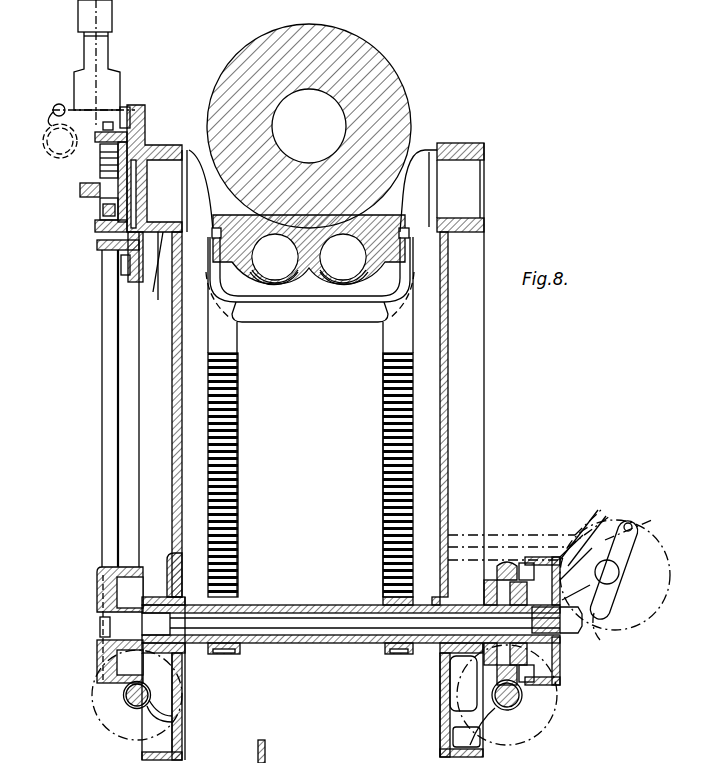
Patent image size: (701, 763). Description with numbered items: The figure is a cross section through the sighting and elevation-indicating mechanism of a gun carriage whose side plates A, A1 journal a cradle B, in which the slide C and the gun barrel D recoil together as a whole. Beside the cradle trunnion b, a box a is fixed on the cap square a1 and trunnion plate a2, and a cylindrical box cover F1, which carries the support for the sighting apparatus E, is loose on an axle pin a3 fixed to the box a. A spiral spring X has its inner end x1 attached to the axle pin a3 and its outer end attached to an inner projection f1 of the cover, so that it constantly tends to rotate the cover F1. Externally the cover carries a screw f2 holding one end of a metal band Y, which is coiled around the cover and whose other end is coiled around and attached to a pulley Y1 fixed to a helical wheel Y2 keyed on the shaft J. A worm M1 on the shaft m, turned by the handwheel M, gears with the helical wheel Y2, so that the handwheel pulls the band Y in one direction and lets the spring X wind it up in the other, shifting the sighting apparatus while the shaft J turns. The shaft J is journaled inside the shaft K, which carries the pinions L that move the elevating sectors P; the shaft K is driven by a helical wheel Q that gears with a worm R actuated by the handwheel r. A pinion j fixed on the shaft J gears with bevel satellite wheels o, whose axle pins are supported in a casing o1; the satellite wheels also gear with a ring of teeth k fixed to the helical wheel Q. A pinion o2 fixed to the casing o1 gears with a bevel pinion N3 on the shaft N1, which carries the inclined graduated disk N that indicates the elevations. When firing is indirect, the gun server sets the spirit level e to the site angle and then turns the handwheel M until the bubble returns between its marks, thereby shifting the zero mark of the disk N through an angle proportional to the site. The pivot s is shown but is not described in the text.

The gun barrel D is at (388, 88).
The sighting apparatus E is at (100, 50).
The spirit level e is at (60, 104).
The screw f2 is at (110, 126).
The spiral spring X is at (145, 142).
The cap square a1 is at (171, 152).
The cradle trunnion b is at (163, 200).
The axle pin a3 is at (92, 190).
The inner end of spiral spring x1 is at (102, 214).
The box cover F1 is at (106, 240).
The inner projection f1 is at (100, 262).
The trunnion plate a2 is at (155, 271).
The box a is at (112, 262).
The slide C is at (368, 205).
The cradle B is at (312, 304).
The elevating sectors P is at (230, 528).
The side plate A is at (175, 474).
The side plate A1 is at (450, 432).
The metal band Y is at (108, 430).
The pulley Y1 is at (114, 587).
The helical wheel Y2 is at (122, 652).
The shaft K is at (318, 605).
The shaft J is at (340, 625).
The pinion L is at (238, 655).
The handwheel M is at (123, 738).
The worm M1 is at (152, 694).
The shaft of worm m is at (185, 714).
The worm R is at (525, 712).
The handwheel r is at (552, 711).
The helical wheel Q is at (462, 690).
The satellite wheels o is at (532, 560).
The ring of teeth k is at (524, 563).
The casing o1 is at (560, 668).
The pinion o2 is at (566, 645).
The pinion j is at (592, 547).
The pivot s is at (634, 528).
The shaft N1 is at (612, 600).
The graduated disk N is at (621, 579).
The bevel pinion N3 is at (608, 630).